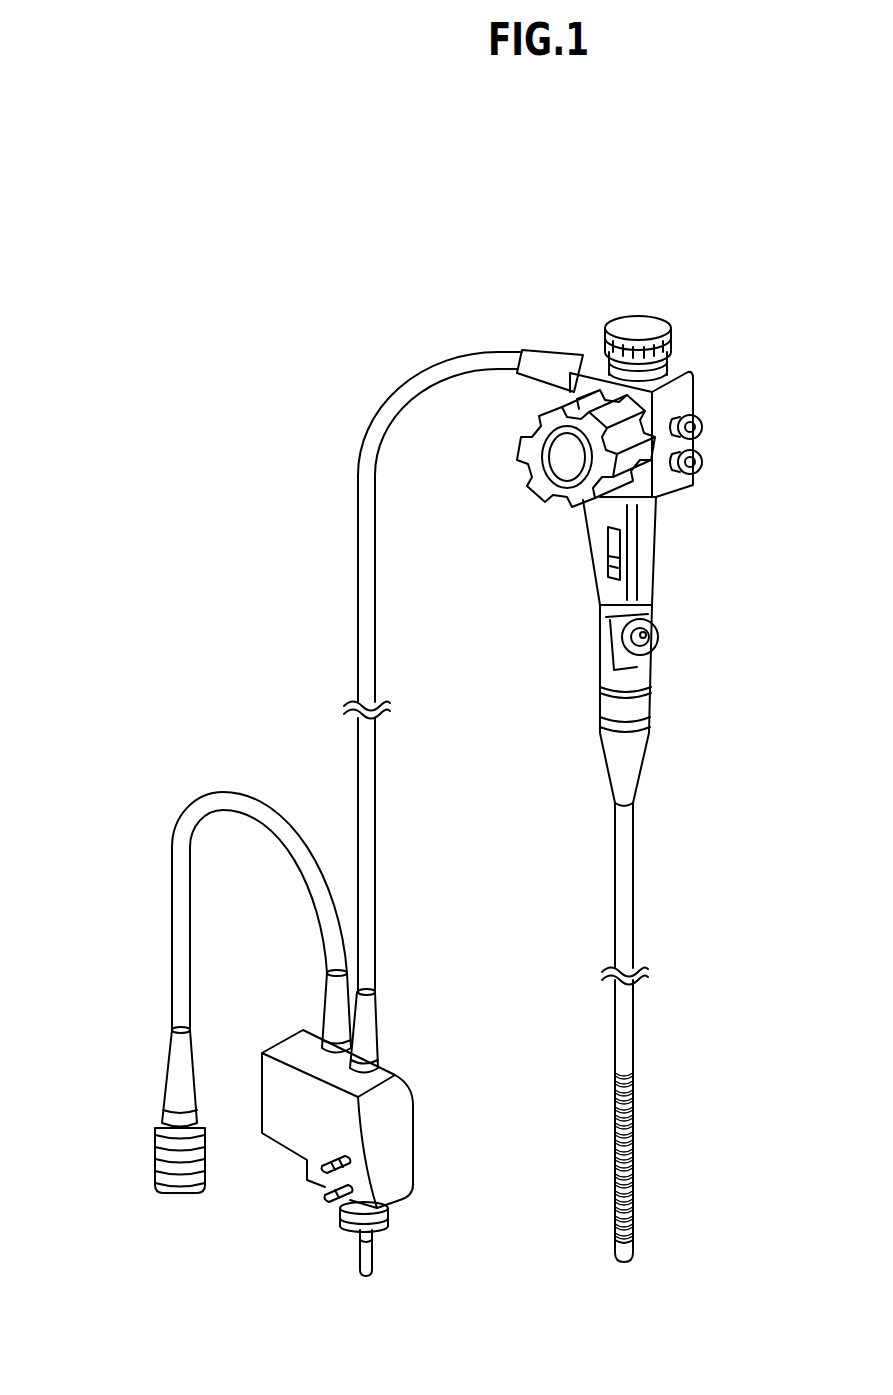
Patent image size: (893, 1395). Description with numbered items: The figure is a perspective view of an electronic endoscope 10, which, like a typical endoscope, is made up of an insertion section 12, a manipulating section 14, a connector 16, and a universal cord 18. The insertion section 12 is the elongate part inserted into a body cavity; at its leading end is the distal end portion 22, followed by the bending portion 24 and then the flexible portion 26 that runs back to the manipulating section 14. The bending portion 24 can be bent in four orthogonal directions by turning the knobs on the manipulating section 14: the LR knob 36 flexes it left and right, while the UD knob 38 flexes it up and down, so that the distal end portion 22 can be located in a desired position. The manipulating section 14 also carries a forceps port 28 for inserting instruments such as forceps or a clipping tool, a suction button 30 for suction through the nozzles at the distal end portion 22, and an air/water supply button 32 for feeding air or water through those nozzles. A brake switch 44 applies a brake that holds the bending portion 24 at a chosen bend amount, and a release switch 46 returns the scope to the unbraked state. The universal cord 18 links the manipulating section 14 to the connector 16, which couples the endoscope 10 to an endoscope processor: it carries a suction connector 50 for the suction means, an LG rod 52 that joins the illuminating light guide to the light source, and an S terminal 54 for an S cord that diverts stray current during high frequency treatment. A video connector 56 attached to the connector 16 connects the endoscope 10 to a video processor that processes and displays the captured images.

The endoscope 10 is at (681, 265).
The insertion section 12 is at (659, 917).
The manipulating section 14 is at (681, 523).
The connector 16 is at (429, 1105).
The universal cord 18 is at (337, 609).
The distal end portion 22 is at (632, 1248).
The bending portion 24 is at (636, 1120).
The flexible portion 26 is at (616, 881).
The forceps port 28 is at (660, 636).
The suction button 30 is at (703, 427).
The air/water supply button 32 is at (704, 463).
The LR knob 36 is at (573, 503).
The UD knob 38 is at (582, 357).
The brake instructing switch 44 is at (618, 560).
The brake release switch 46 is at (608, 540).
The suction connector 50 is at (310, 1166).
The LG rod 52 is at (372, 1257).
The S terminal 54 is at (322, 1197).
The video connector 56 is at (175, 1088).